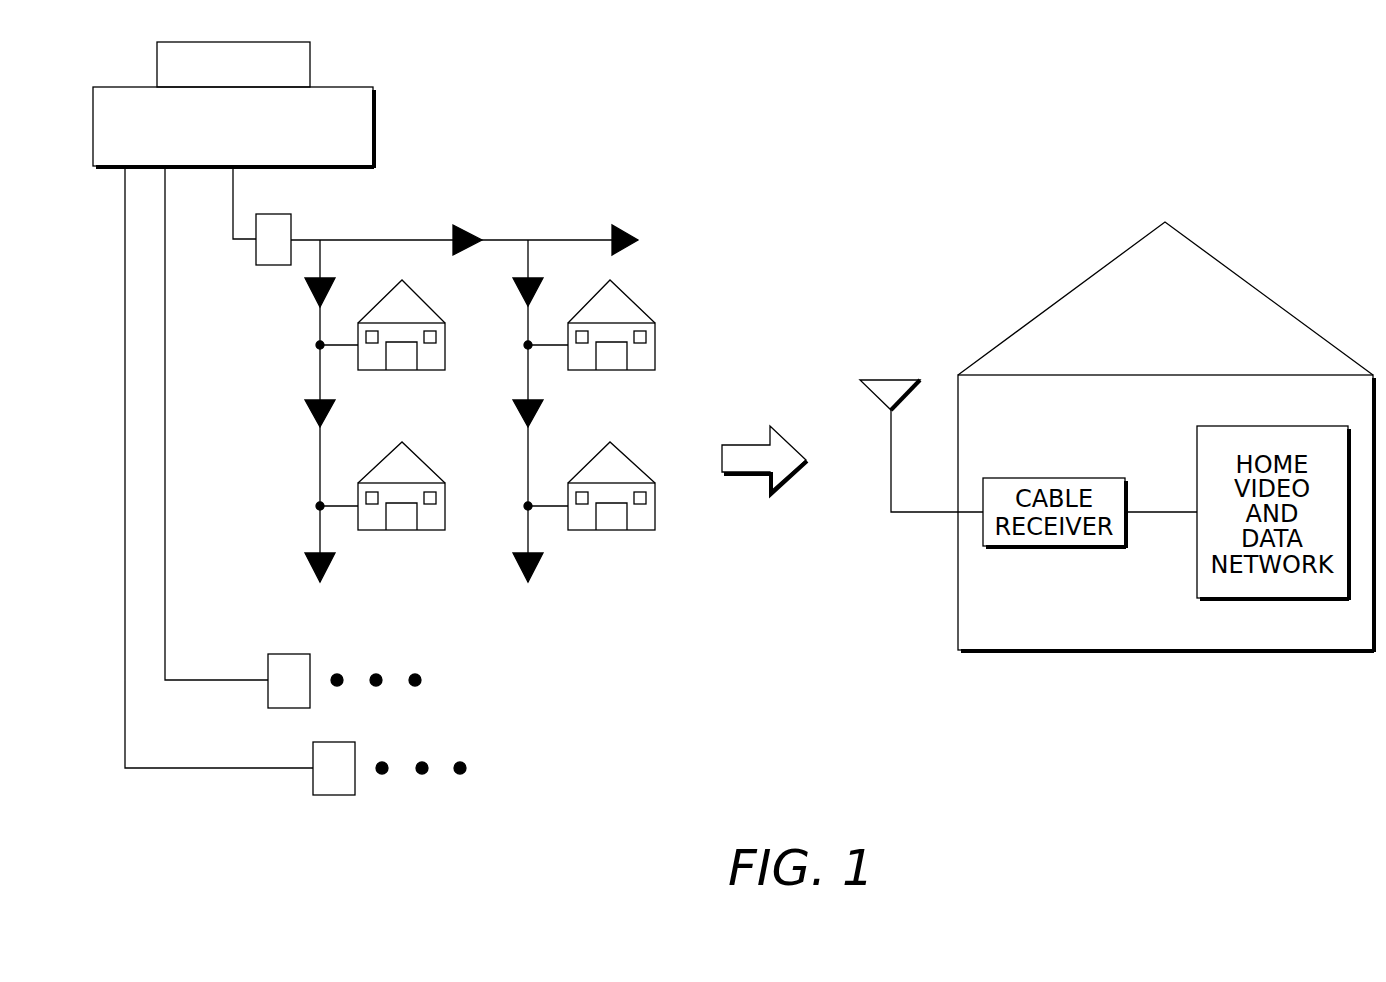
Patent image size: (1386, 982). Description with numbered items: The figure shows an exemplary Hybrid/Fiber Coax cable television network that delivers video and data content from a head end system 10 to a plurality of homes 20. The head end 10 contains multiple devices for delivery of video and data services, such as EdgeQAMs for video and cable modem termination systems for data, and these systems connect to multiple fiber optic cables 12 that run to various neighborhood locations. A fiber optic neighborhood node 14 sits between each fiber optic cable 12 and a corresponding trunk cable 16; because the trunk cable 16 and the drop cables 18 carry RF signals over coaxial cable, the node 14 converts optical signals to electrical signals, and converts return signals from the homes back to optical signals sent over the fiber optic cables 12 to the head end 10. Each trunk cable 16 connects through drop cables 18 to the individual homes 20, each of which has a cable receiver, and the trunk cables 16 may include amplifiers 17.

The head end system 10 is at (431, 80).
The fiber optic cable 12 is at (233, 192).
The fiber optic neighborhood node 14 is at (272, 266).
The trunk cable 16 is at (507, 240).
The amplifier 17 is at (318, 412).
The drop cable 18 is at (545, 345).
The home 20 is at (427, 305).